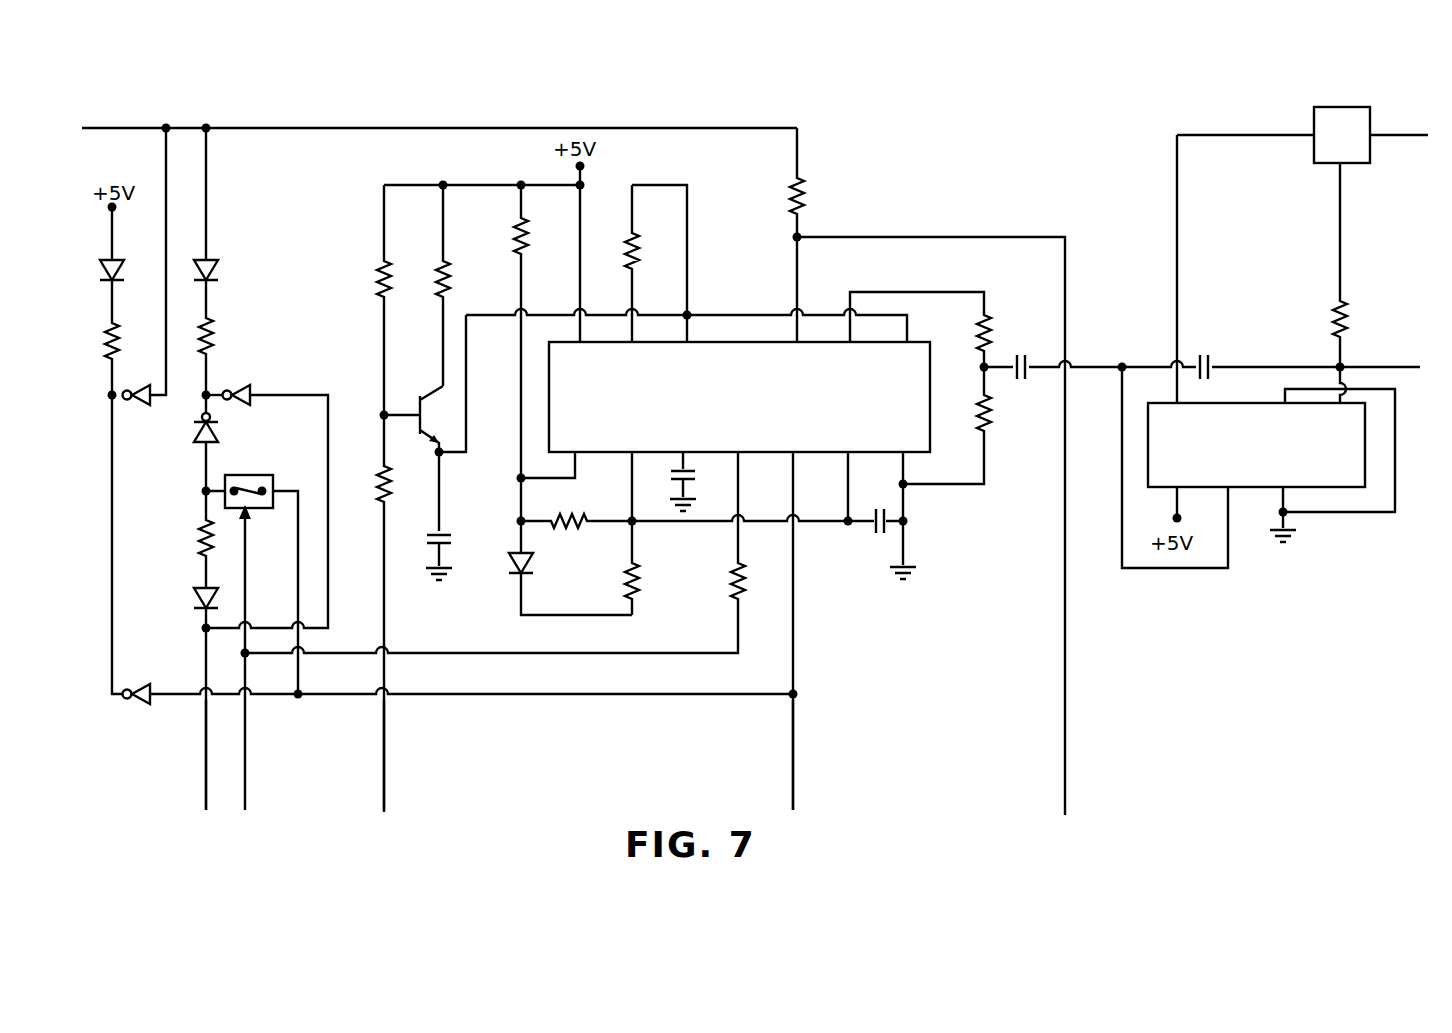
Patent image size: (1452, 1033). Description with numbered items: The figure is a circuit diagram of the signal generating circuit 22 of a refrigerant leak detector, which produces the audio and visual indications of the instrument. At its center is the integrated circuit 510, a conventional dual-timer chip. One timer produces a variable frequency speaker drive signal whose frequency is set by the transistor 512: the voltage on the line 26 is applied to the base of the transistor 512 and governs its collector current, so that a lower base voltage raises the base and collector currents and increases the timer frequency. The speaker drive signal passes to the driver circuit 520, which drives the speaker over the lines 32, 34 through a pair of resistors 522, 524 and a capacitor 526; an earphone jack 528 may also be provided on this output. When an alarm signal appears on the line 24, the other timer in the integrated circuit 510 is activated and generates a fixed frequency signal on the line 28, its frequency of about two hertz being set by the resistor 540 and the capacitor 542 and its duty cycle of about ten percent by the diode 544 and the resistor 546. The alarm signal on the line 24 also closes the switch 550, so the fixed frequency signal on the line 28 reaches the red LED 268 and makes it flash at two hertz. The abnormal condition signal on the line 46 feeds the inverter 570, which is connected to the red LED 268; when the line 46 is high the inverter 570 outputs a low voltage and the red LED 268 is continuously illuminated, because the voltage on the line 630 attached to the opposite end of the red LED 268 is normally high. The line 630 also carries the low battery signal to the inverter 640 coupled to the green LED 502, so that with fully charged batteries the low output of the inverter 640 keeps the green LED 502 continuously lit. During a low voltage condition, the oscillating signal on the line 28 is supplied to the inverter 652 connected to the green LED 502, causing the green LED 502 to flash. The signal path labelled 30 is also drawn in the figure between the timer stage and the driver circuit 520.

The signal generating circuit 22 is at (218, 102).
The line 630 is at (398, 128).
The red LED 268 is at (219, 270).
The green LED 502 is at (98, 266).
The inverter 640 is at (140, 404).
The inverter 570 is at (234, 404).
The switch 550 is at (250, 476).
The transistor 512 is at (437, 430).
The resistor 540 is at (562, 512).
The diode 544 is at (528, 560).
The resistor 546 is at (638, 578).
The capacitor 542 is at (873, 532).
The inverter 652 is at (135, 686).
The line 46 is at (203, 778).
The line 24 is at (248, 780).
The line 26 is at (386, 783).
The line 28 is at (796, 786).
The line 30 is at (866, 237).
The integrated circuit 510 is at (741, 409).
The resistor 522 is at (994, 334).
The resistor 524 is at (990, 430).
The capacitor 526 is at (1027, 377).
The driver circuit 520 is at (1276, 459).
The earphone jack 528 is at (1340, 107).
The line 32 is at (1386, 140).
The line 34 is at (1376, 367).